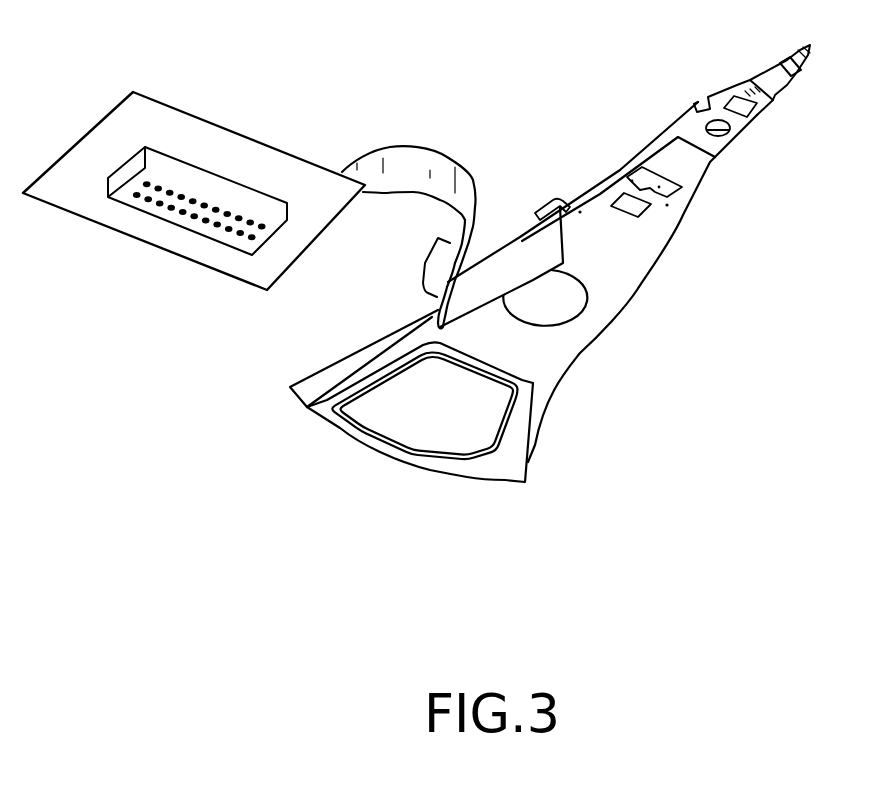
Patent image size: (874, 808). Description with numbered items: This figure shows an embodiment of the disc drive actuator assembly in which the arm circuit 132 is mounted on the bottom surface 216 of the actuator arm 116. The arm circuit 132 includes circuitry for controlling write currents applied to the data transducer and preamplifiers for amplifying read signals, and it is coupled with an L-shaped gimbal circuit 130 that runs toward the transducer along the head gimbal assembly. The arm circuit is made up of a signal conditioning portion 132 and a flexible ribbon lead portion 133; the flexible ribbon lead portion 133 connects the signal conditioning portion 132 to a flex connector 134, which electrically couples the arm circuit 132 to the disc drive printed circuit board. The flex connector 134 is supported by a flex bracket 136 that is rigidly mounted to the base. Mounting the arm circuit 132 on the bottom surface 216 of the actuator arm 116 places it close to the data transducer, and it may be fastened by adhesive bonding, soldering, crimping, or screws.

The actuator arm 116 is at (527, 453).
The gimbal circuit 130 is at (713, 86).
The arm circuit 132 is at (630, 242).
The flexible ribbon lead portion 133 is at (420, 162).
The flex connector 134 is at (225, 187).
The flex bracket 136 is at (180, 245).
The bottom surface 216 is at (553, 357).